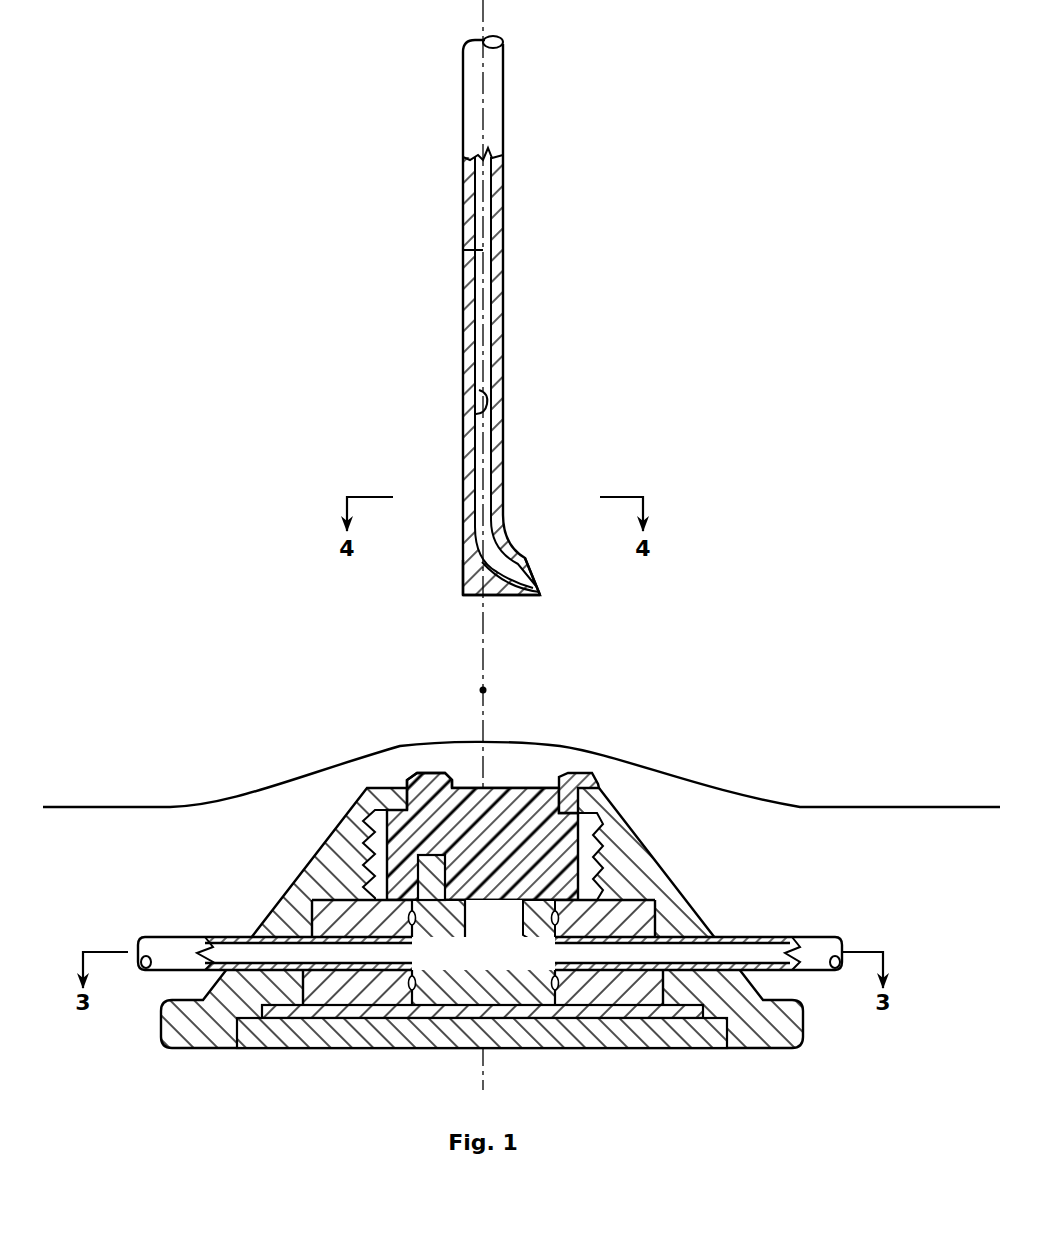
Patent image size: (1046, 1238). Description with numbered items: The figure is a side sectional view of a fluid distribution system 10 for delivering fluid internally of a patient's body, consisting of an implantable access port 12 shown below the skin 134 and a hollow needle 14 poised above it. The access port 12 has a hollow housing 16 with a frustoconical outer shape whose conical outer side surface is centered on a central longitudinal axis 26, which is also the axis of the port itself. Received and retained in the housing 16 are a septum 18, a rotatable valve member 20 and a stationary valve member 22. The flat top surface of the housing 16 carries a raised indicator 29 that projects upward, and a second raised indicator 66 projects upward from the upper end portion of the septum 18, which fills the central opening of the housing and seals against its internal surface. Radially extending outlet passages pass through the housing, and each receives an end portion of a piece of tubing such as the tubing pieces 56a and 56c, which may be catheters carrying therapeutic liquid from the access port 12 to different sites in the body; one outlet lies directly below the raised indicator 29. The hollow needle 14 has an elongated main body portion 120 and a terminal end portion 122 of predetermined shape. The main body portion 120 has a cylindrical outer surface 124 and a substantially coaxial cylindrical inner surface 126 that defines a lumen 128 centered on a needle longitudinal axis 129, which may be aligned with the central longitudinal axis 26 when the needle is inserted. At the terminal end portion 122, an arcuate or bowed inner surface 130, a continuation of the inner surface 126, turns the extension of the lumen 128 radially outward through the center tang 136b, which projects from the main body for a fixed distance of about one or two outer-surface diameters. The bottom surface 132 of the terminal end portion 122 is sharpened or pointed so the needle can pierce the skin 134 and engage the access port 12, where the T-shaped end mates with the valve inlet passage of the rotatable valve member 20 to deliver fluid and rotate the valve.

The fluid distribution system 10 is at (760, 413).
The implantable access port 12 is at (780, 890).
The hollow needle 14 is at (590, 365).
The housing 16 is at (668, 868).
The septum 18 is at (545, 780).
The rotatable valve member 20 is at (540, 1007).
The stationary valve member 22 is at (627, 1007).
The central longitudinal axis 26 is at (489, 689).
The raised indicator 29 is at (600, 777).
The piece of tubing 56a is at (817, 952).
The piece of tubing 56c is at (176, 952).
The raised indicator 66 is at (418, 780).
The main body portion 120 is at (503, 126).
The terminal end portion 122 is at (463, 570).
The cylindrical outer surface 124 is at (503, 247).
The cylindrical inner surface 126 is at (479, 390).
The lumen 128 is at (491, 315).
The needle longitudinal axis 129 is at (458, 248).
The arcuate inner surface 130 is at (513, 573).
The bottom surface 132 is at (510, 596).
The skin 134 is at (143, 806).
The center tang 136b is at (513, 548).